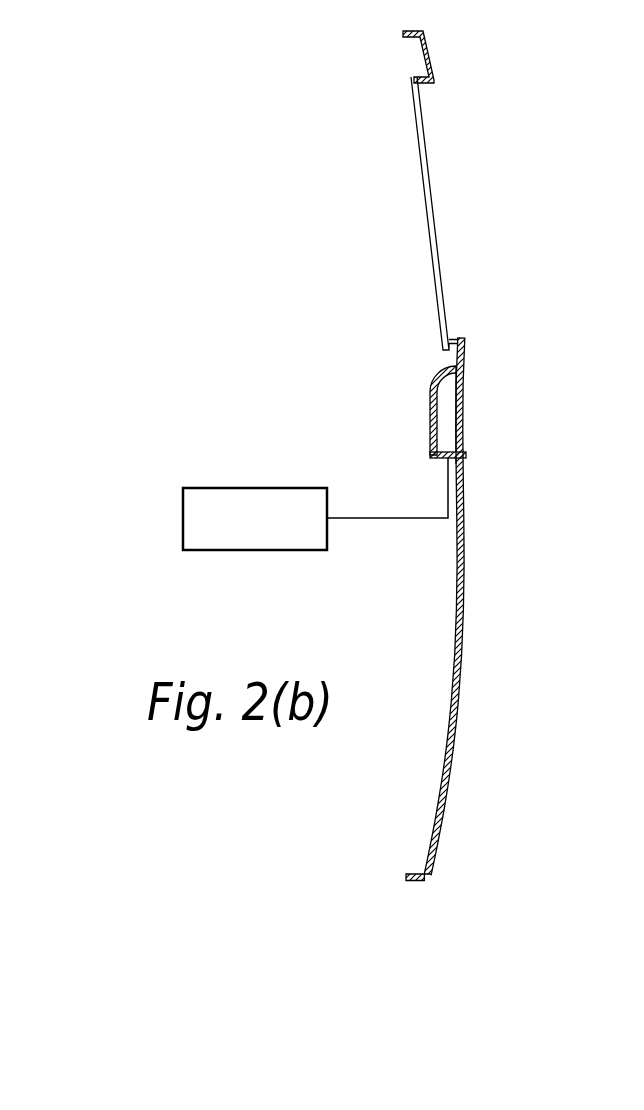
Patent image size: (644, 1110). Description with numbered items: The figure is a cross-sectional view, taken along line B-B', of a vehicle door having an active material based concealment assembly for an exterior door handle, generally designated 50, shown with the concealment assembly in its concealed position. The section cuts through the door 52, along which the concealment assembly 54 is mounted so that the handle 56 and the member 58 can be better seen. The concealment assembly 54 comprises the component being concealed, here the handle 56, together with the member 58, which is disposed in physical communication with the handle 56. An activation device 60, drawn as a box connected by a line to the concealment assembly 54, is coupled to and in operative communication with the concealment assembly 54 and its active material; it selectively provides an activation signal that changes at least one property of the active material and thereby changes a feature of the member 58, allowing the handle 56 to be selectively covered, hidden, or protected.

The vehicle door having an active material based concealment assembly 50 is at (524, 157).
The door 52 is at (460, 644).
The concealment assembly 54 is at (410, 407).
The handle 56 is at (466, 391).
The member 58 is at (466, 426).
The activation device 60 is at (252, 488).